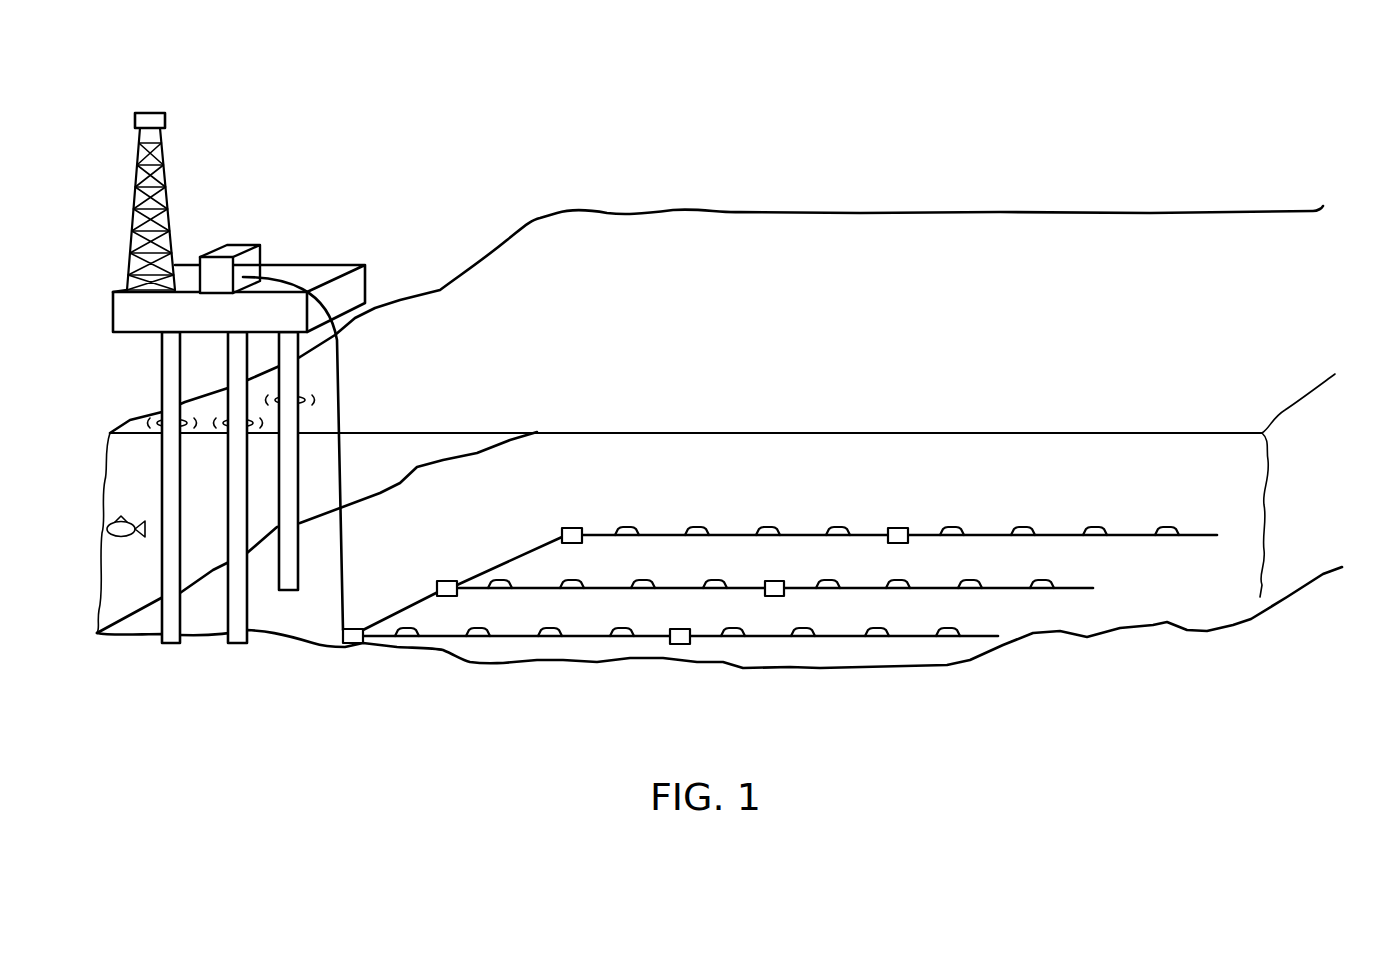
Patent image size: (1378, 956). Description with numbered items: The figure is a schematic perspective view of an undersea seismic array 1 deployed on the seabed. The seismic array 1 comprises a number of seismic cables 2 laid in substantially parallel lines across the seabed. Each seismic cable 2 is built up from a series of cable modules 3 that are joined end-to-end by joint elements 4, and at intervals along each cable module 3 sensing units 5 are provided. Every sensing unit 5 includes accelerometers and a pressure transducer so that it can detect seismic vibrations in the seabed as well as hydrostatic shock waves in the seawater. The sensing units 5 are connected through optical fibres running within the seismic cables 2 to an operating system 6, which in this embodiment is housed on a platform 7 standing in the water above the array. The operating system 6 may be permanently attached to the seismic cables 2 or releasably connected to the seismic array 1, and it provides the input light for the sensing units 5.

The seismic array 1 is at (918, 378).
The seismic cable 2 is at (760, 594).
The cable module 3 is at (907, 512).
The joint element 4 is at (902, 526).
The sensing unit 5 is at (1093, 527).
The operating system 6 is at (242, 243).
The platform 7 is at (107, 162).